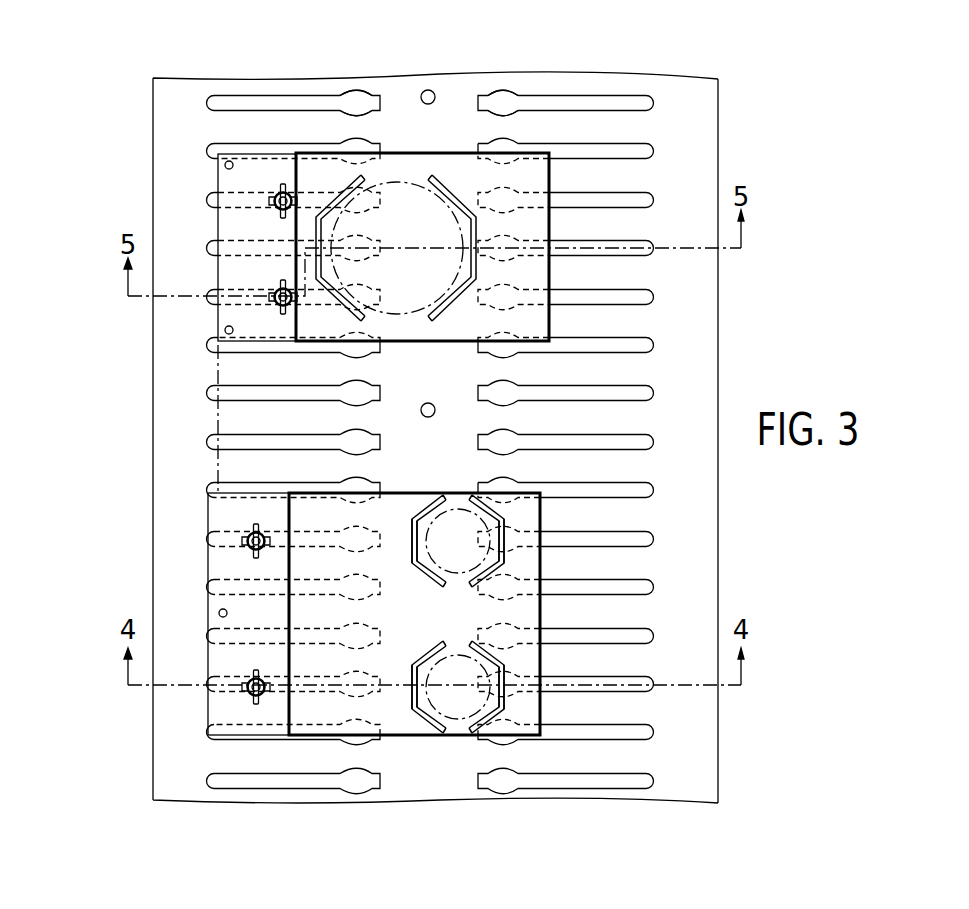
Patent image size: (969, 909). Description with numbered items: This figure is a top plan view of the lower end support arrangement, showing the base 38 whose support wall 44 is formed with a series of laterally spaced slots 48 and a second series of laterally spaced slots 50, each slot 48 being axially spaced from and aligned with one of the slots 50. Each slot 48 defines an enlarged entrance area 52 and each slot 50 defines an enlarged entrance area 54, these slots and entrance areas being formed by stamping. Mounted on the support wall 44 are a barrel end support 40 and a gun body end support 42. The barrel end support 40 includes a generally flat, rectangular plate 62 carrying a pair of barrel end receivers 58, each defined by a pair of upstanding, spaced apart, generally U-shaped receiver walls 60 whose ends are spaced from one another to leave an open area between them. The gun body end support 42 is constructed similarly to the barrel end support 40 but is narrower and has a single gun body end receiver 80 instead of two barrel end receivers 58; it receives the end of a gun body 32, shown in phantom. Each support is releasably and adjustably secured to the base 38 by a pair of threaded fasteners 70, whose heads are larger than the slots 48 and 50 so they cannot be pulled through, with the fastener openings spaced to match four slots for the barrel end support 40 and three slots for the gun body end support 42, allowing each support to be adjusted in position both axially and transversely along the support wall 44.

The gun body 32 is at (402, 207).
The base 38 is at (509, 437).
The barrel end support 40 is at (426, 623).
The gun body end support 42 is at (422, 238).
The support wall 44 is at (683, 323).
The slots 48 is at (603, 150).
The slots 50 is at (235, 100).
The enlarged entrance area 52 is at (502, 97).
The enlarged entrance area 54 is at (357, 97).
The barrel end receiver 58 is at (520, 513).
The receiver wall 60 is at (435, 542).
The plate 62 is at (217, 558).
The threaded fastener 70 is at (98, 728).
The gun body end receiver 80 is at (457, 183).